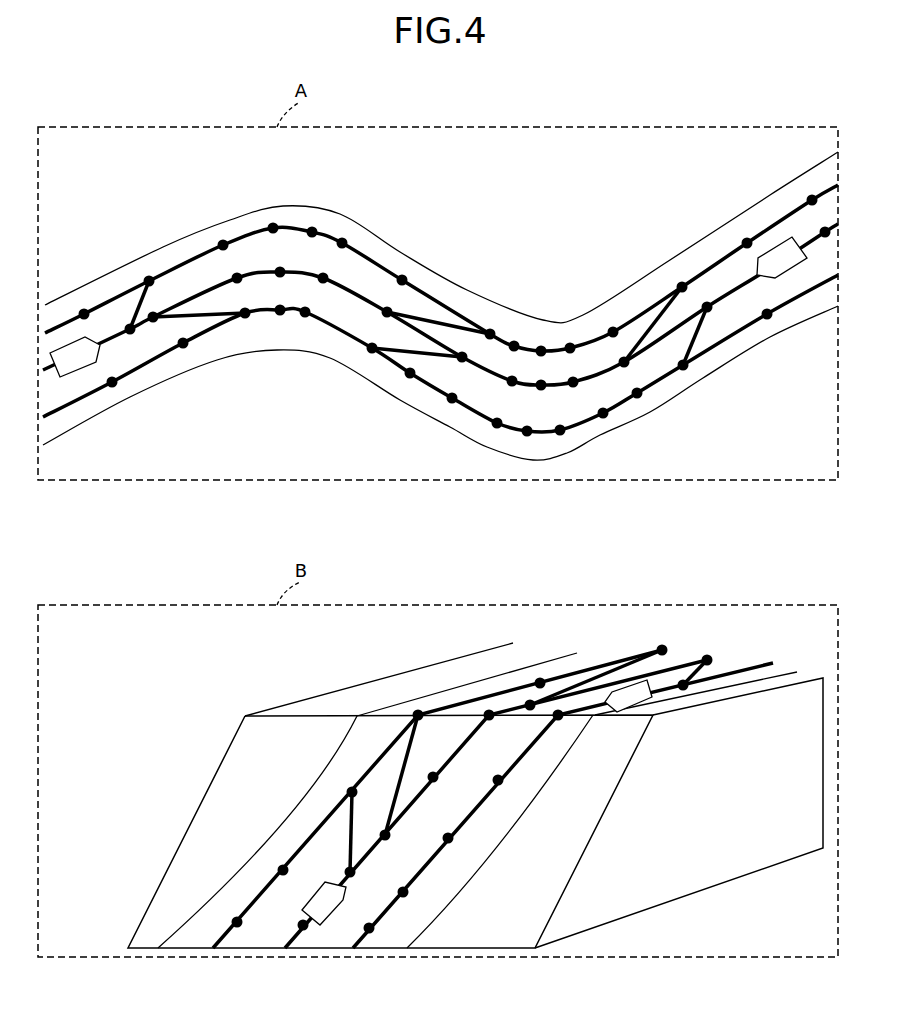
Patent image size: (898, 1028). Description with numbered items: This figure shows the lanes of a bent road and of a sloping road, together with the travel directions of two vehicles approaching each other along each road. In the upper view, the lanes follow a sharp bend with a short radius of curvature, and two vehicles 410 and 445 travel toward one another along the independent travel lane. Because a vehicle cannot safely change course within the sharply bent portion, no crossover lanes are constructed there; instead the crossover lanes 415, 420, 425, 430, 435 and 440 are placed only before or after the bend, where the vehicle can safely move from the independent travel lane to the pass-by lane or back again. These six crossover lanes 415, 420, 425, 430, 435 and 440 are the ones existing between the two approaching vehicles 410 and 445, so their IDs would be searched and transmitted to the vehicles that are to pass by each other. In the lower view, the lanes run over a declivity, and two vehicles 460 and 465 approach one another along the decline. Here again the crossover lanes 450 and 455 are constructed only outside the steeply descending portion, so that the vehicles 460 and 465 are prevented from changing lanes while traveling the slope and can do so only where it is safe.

The vehicle 410 is at (64, 345).
The crossover lane 415 is at (134, 300).
The crossover lane 420 is at (193, 315).
The crossover lane 425 is at (440, 323).
The crossover lane 430 is at (433, 358).
The crossover lane 435 is at (650, 323).
The crossover lane 440 is at (698, 337).
The vehicle 445 is at (778, 240).
The crossover lane 450 is at (374, 764).
The crossover lane 455 is at (349, 828).
The vehicle 460 is at (312, 897).
The vehicle 465 is at (630, 692).